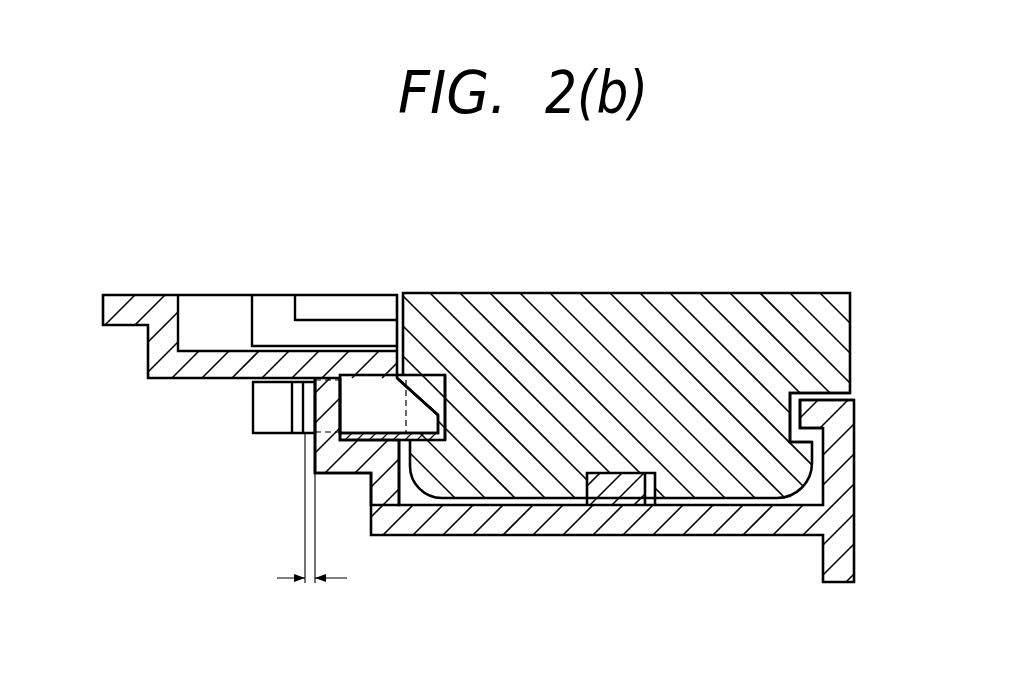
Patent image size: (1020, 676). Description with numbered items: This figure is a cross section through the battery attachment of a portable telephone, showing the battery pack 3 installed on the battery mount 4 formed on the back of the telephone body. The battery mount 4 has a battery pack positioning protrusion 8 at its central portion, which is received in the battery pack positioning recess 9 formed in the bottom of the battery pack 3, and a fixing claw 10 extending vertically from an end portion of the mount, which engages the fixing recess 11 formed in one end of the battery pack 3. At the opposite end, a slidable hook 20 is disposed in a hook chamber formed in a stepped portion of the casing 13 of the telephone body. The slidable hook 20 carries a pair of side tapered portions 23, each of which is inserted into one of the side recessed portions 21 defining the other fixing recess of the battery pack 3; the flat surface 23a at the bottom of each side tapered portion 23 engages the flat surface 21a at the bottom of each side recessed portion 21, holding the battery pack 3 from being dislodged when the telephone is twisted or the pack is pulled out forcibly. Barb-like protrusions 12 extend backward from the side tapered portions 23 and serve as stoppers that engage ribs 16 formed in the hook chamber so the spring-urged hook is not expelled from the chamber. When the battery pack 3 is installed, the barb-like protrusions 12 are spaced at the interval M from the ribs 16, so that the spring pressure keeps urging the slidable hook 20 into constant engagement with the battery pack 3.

The battery pack 3 is at (602, 302).
The battery mount 4 is at (728, 507).
The battery pack positioning protrusion 8 is at (618, 483).
The battery pack positioning recess 9 is at (617, 470).
The fixing claw 10 is at (823, 412).
The fixing recess 11 is at (815, 393).
The barb-like protrusion 12 is at (262, 413).
The casing 13 is at (160, 345).
The rib 16 is at (325, 420).
The slidable hook 20 is at (272, 310).
The side recessed portion 21 is at (420, 418).
The flat surface 21a is at (413, 442).
The side tapered portion 23 is at (407, 377).
The flat surface 23a is at (433, 440).
The interval M is at (312, 595).